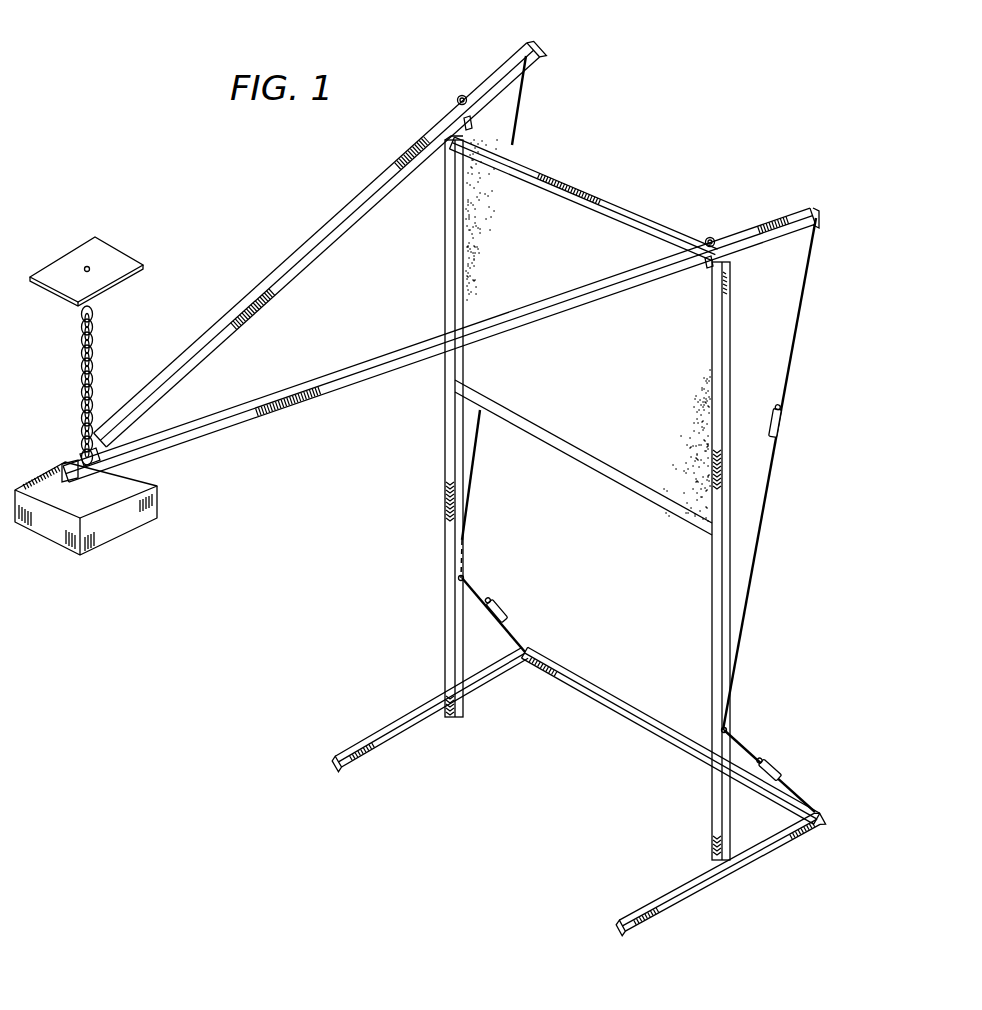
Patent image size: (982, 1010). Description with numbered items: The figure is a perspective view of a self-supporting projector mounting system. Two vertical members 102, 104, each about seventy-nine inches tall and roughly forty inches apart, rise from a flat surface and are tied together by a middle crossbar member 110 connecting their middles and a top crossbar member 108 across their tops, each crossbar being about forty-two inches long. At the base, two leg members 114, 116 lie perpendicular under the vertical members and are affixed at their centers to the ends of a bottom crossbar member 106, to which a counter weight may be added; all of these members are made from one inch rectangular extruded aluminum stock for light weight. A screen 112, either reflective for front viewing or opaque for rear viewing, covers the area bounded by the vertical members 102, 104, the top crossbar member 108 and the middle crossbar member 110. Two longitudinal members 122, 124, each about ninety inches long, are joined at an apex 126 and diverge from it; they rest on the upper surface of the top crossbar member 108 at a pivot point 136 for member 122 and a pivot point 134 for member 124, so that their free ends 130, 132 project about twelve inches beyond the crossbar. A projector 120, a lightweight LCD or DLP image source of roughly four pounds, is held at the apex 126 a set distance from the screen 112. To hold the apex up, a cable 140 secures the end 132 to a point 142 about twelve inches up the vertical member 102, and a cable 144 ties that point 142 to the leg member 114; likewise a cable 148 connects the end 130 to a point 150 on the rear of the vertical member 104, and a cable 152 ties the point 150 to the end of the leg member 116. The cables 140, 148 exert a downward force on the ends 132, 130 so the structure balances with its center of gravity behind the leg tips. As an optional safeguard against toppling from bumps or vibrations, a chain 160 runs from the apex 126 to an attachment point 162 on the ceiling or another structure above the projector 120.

The vertical member 102 is at (712, 584).
The vertical member 104 is at (446, 437).
The bottom crossbar member 106 is at (626, 715).
The top crossbar member 108 is at (606, 208).
The middle crossbar member 110 is at (636, 486).
The screen 112 is at (613, 385).
The leg member 114 is at (702, 886).
The leg member 116 is at (390, 726).
The projector 120 is at (128, 517).
The longitudinal member 122 is at (306, 246).
The longitudinal member 124 is at (374, 363).
The apex 126 is at (70, 462).
The end 130 is at (525, 42).
The end 132 is at (812, 210).
The pivot point 134 is at (714, 262).
The pivot point 136 is at (486, 95).
The cable 140 is at (796, 348).
The point 142 is at (722, 730).
The cable 144 is at (800, 796).
The cable 148 is at (480, 455).
The point 150 is at (455, 578).
The cable 152 is at (518, 632).
The chain 160 is at (80, 352).
The attachment point 162 is at (73, 258).